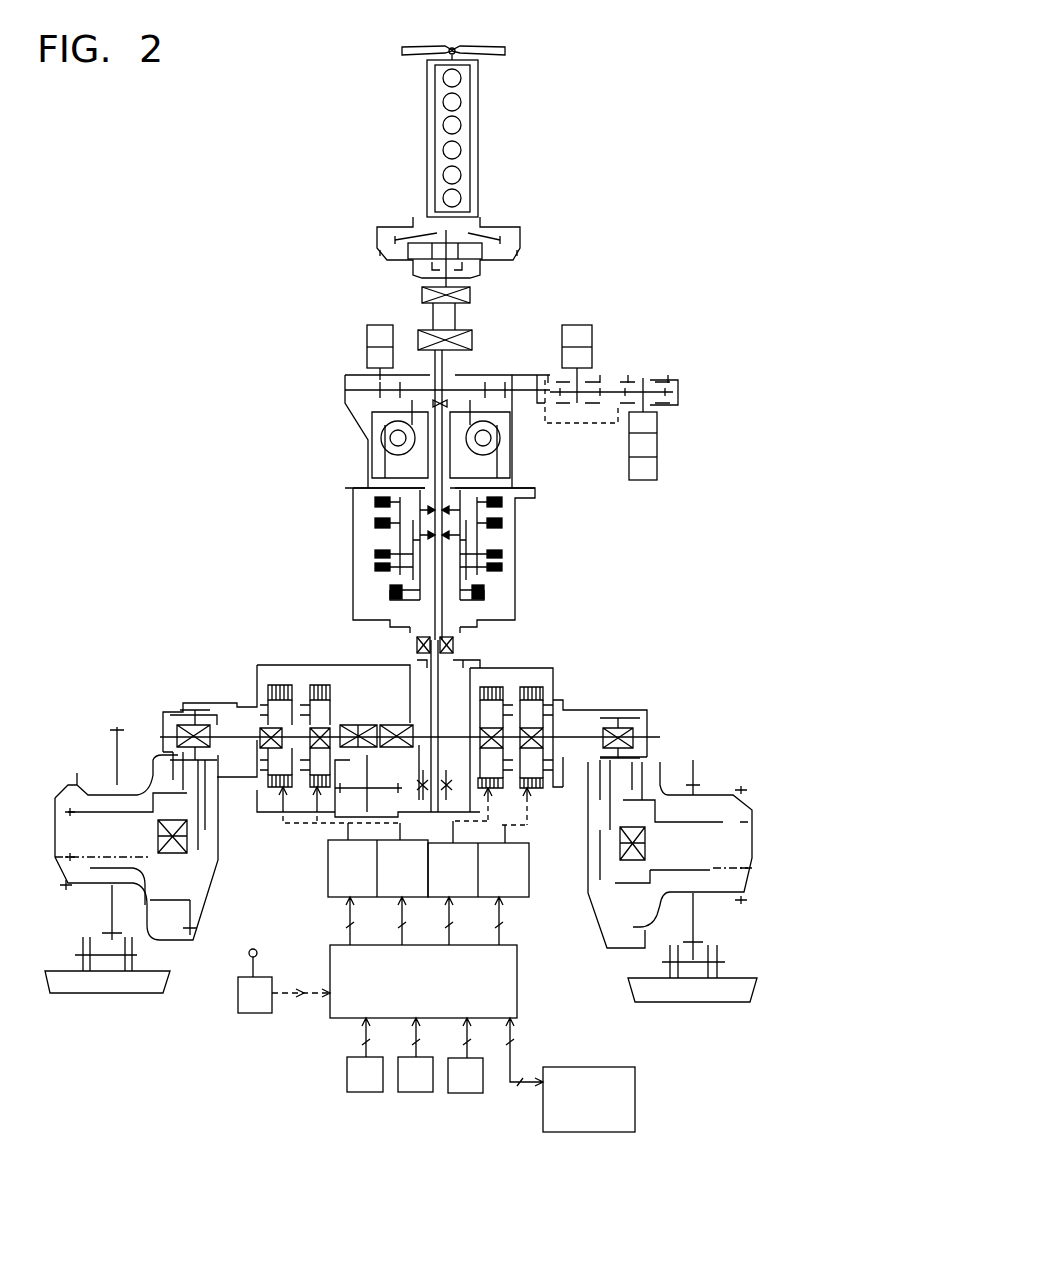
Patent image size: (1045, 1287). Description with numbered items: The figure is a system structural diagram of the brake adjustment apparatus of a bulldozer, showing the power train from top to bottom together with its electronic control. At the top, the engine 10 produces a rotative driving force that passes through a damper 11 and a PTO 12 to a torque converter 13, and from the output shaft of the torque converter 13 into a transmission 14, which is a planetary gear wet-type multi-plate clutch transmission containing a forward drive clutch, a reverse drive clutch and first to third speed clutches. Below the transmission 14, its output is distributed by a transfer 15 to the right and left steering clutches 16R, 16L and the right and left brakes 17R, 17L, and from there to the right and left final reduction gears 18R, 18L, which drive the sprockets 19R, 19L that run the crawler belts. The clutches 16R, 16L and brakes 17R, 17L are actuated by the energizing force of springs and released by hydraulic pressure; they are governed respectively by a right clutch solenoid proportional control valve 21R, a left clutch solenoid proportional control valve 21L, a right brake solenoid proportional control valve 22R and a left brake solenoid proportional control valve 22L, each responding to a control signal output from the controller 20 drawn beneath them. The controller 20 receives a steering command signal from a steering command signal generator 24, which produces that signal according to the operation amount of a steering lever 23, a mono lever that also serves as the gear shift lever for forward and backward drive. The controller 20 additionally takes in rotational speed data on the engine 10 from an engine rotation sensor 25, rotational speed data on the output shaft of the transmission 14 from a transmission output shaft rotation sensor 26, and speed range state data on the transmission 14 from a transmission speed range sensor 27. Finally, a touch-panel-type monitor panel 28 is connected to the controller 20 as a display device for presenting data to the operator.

The engine 10 is at (427, 145).
The damper 11 is at (377, 240).
The PTO 12 is at (678, 393).
The torque converter 13 is at (378, 430).
The transmission 14 is at (370, 558).
The transfer 15 is at (430, 753).
The left steering clutch 16L is at (313, 685).
The right steering clutch 16R is at (490, 705).
The left brake 17L is at (277, 690).
The right brake 17R is at (543, 688).
The left final reduction gear 18L is at (158, 763).
The right final reduction gear 18R is at (653, 770).
The left sprocket 19L is at (100, 947).
The right sprocket 19R is at (707, 960).
The controller 20 is at (517, 985).
The left clutch solenoid proportional control valve 21L is at (385, 897).
The right clutch solenoid proportional control valve 21R is at (440, 897).
The left brake solenoid proportional control valve 22L is at (328, 862).
The right brake solenoid proportional control valve 22R is at (529, 870).
The steering lever 23 is at (250, 951).
The steering command signal generator 24 is at (238, 1000).
The engine rotation sensor 25 is at (360, 1092).
The transmission output shaft rotation sensor 26 is at (412, 1092).
The transmission speed range sensor 27 is at (480, 1077).
The monitor panel 28 is at (635, 1083).